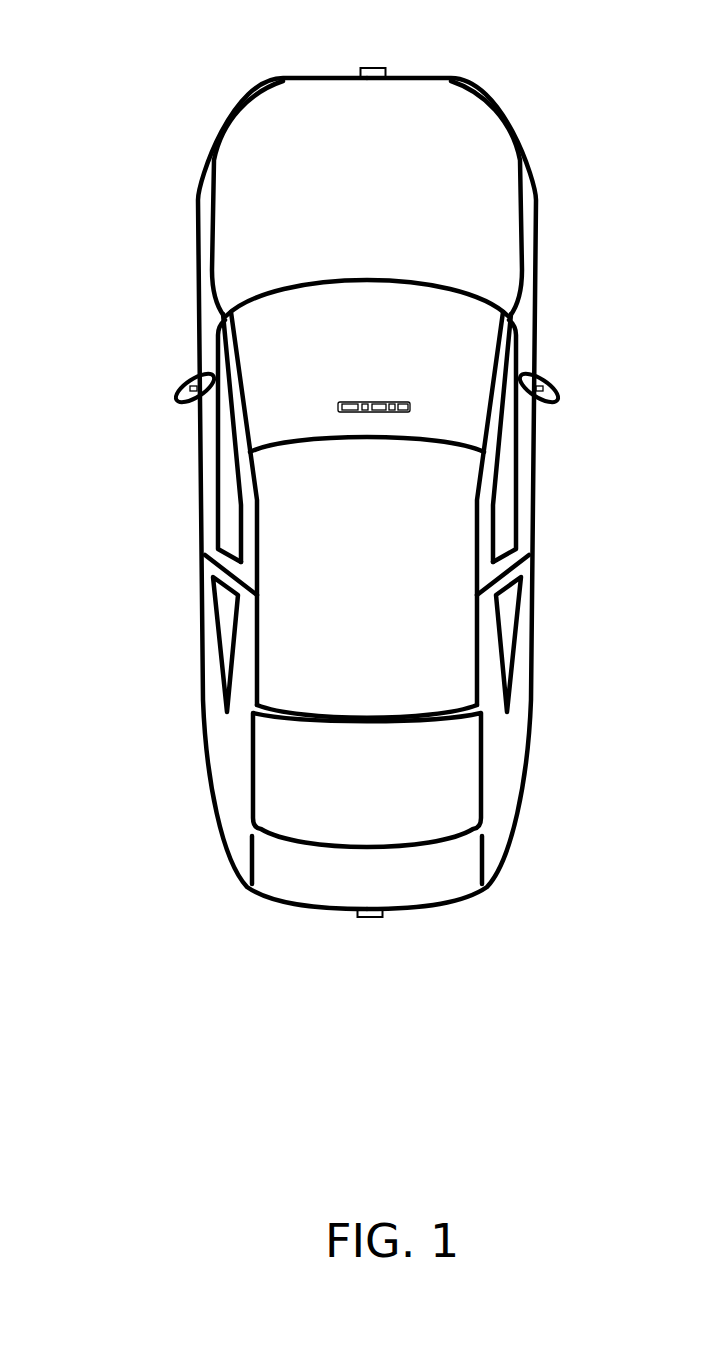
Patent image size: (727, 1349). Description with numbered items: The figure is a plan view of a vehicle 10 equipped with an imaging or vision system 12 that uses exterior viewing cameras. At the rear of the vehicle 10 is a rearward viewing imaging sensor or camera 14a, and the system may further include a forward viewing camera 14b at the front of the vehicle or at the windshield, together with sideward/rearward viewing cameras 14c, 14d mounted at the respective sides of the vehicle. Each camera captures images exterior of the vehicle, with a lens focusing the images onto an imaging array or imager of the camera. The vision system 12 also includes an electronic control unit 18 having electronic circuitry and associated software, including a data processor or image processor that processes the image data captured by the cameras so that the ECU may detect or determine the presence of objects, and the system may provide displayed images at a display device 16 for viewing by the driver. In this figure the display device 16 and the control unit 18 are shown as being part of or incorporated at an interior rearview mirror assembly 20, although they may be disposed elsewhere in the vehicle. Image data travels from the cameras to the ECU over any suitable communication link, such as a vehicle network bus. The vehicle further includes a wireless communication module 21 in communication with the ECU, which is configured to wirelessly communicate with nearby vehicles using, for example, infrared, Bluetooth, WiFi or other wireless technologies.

The vehicle 10 is at (135, 93).
The vision system 12 is at (328, 927).
The rearward viewing camera 14a is at (373, 917).
The forward viewing camera 14b is at (377, 68).
The sideward/rearward viewing camera 14c is at (178, 384).
The sideward/rearward viewing camera 14d is at (556, 384).
The display device 16 is at (352, 402).
The electronic control unit 18 is at (372, 400).
The interior rearview mirror assembly 20 is at (410, 403).
The wireless communication module 21 is at (412, 410).